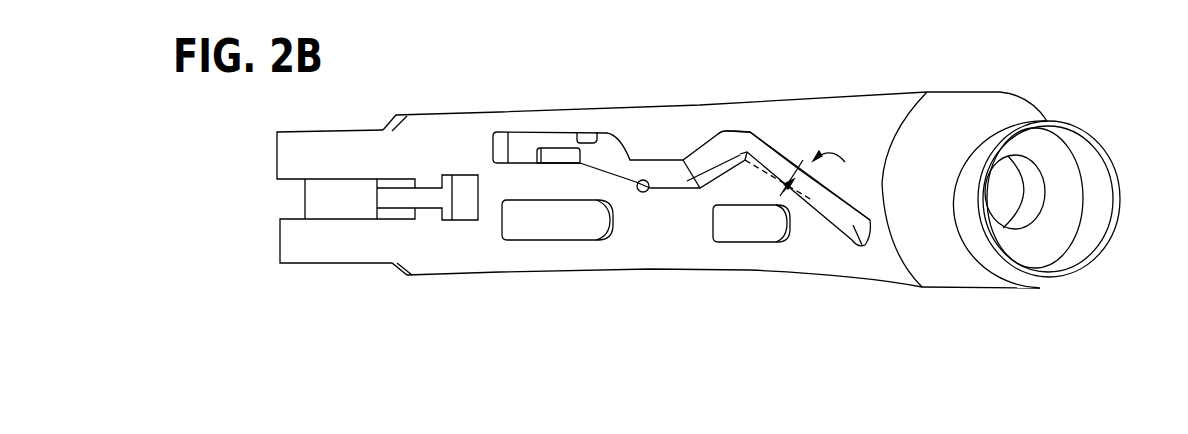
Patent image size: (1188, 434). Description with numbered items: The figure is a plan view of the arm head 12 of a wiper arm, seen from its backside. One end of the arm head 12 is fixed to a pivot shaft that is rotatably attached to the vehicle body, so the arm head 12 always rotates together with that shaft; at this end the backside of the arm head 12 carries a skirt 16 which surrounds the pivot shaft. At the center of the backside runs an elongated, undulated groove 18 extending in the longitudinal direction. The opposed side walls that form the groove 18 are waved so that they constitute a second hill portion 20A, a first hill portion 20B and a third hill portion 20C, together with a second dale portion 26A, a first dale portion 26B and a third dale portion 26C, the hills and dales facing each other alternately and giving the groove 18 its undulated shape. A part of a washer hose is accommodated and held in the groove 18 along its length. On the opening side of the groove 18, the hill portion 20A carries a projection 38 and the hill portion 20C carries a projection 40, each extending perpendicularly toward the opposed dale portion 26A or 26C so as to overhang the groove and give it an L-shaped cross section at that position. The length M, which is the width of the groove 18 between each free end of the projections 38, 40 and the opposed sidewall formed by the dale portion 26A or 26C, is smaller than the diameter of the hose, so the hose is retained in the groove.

The arm head 12 is at (490, 113).
The skirt 16 is at (1085, 160).
The groove 18 is at (662, 180).
The second hill portion 20A is at (797, 145).
The first hill portion 20B is at (678, 150).
The third hill portion 20C is at (563, 167).
The second dale portion 26A is at (733, 137).
The first dale portion 26B is at (647, 192).
The third dale portion 26C is at (593, 133).
The projection 38 is at (817, 168).
The projection 40 is at (550, 148).
The length M is at (825, 171).